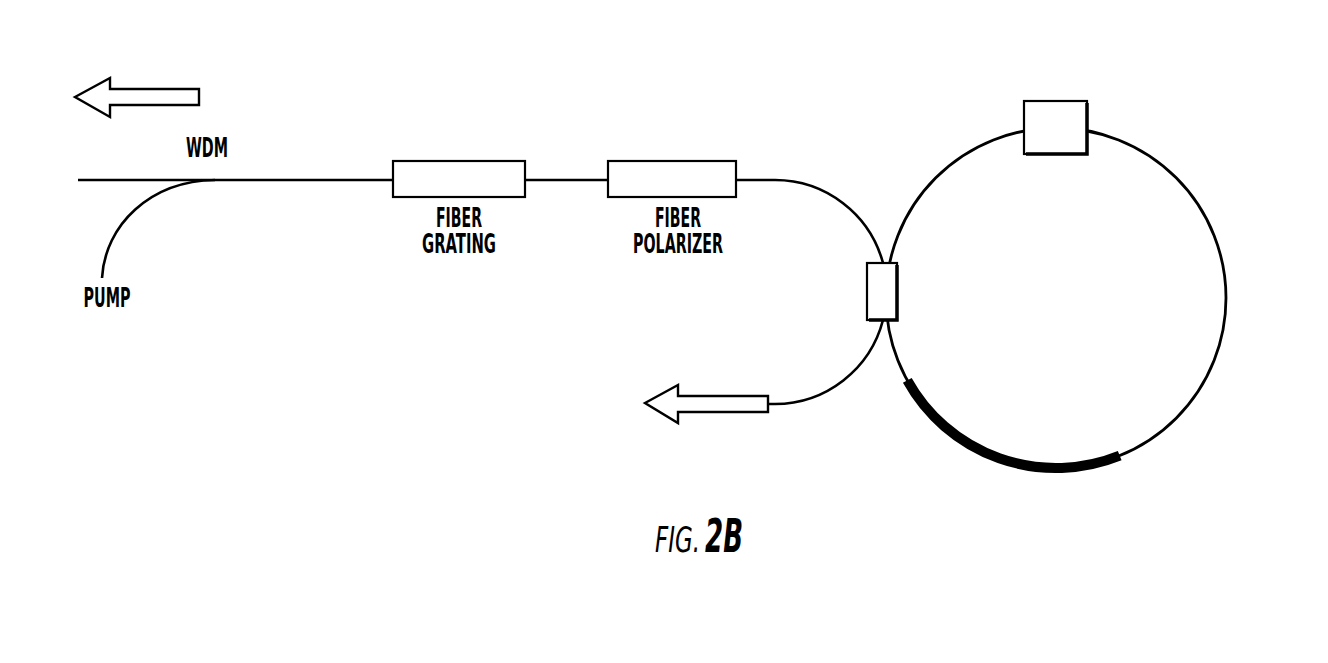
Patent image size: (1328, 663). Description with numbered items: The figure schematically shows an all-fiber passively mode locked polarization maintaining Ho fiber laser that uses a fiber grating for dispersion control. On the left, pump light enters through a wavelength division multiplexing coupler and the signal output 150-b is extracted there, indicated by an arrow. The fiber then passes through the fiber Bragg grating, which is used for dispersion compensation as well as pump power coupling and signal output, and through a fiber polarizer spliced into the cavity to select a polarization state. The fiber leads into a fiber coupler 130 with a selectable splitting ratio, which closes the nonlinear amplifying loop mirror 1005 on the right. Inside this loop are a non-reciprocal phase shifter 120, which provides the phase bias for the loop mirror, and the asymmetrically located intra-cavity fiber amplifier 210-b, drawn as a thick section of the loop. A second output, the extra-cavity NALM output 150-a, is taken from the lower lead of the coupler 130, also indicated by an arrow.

The non-reciprocal phase shifter 120 is at (1060, 101).
The fiber coupler 130 is at (867, 287).
The extra-cavity NALM output 150-a is at (645, 432).
The output 150-b is at (154, 74).
The intra-cavity fiber amplifier 210-b is at (997, 463).
The nonlinear amplifying loop mirror 1005 is at (1212, 415).